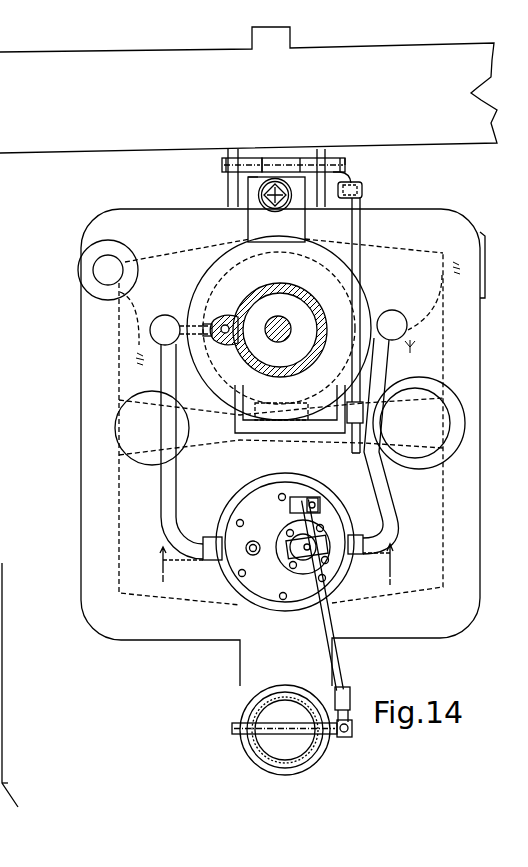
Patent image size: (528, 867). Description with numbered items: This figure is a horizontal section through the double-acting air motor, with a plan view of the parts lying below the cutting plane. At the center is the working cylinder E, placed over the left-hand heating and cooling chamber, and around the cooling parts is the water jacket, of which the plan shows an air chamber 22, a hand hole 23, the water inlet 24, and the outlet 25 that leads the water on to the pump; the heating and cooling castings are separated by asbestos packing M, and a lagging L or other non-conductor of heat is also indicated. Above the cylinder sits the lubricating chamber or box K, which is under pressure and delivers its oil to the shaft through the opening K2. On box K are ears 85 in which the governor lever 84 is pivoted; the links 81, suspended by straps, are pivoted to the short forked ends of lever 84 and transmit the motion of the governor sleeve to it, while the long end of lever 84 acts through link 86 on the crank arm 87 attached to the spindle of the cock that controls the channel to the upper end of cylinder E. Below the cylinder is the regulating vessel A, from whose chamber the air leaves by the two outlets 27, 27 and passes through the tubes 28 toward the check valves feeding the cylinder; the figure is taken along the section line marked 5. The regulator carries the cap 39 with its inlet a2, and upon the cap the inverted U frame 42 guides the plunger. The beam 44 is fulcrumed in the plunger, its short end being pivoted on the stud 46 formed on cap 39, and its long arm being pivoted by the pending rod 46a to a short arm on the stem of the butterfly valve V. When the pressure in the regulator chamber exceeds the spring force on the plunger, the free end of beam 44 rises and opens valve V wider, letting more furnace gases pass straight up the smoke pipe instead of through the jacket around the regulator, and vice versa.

The links 81 is at (226, 164).
The ears 85 is at (297, 160).
The lever 84 is at (357, 181).
The link 86 is at (360, 236).
The crank arm 87 is at (346, 428).
The water inlet 24 is at (523, 263).
The water outlet 25 is at (108, 270).
The hand hole 23 is at (152, 428).
The air chamber 22 is at (419, 423).
The tube 28 is at (170, 484).
The outlets 27 is at (212, 560).
The section line 5 is at (277, 564).
The stud 46 is at (322, 507).
The pending rod 46a is at (350, 693).
The beam 44 is at (324, 629).
The inverted U frame 42 is at (287, 556).
The cap 39 is at (284, 547).
The inlet a2 is at (247, 546).
The lubricating chamber K is at (276, 209).
The opening K2 is at (253, 181).
The cylinder E is at (275, 328).
The regulating vessel A is at (285, 542).
The butterfly valve V is at (284, 730).
The lagging L is at (3, 620).
The asbestos packing M is at (17, 782).